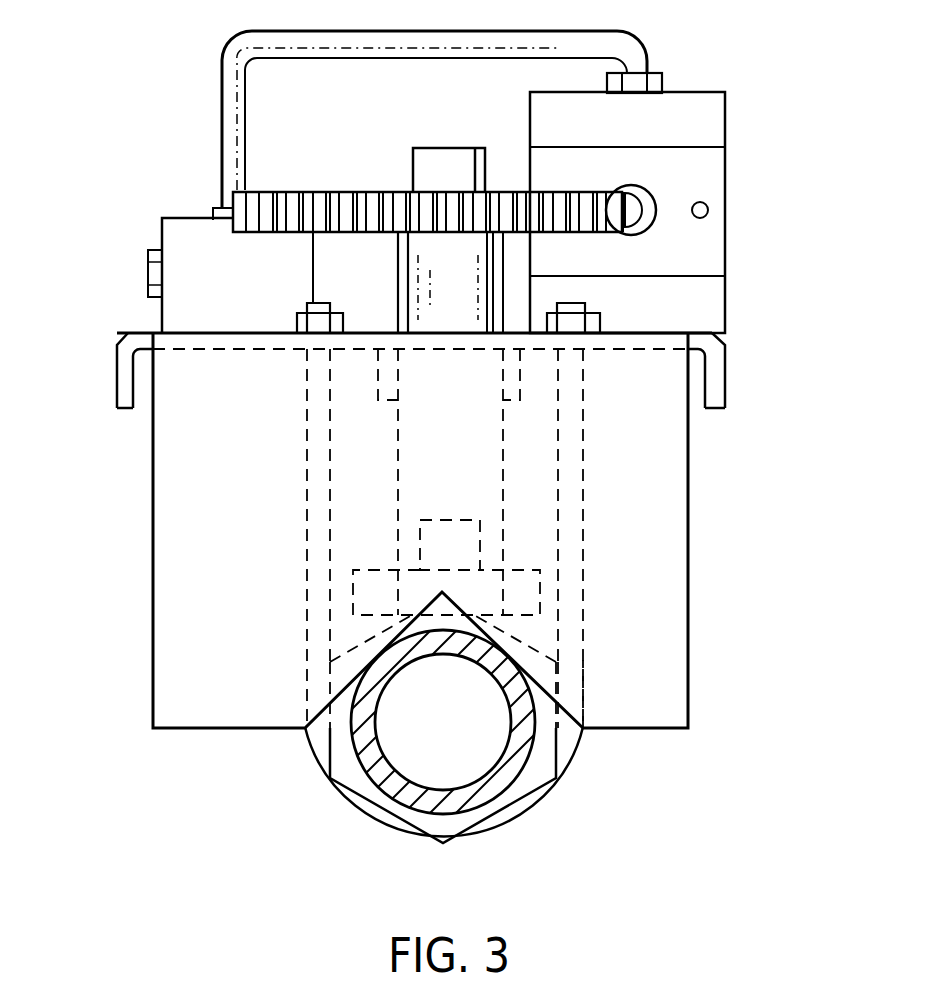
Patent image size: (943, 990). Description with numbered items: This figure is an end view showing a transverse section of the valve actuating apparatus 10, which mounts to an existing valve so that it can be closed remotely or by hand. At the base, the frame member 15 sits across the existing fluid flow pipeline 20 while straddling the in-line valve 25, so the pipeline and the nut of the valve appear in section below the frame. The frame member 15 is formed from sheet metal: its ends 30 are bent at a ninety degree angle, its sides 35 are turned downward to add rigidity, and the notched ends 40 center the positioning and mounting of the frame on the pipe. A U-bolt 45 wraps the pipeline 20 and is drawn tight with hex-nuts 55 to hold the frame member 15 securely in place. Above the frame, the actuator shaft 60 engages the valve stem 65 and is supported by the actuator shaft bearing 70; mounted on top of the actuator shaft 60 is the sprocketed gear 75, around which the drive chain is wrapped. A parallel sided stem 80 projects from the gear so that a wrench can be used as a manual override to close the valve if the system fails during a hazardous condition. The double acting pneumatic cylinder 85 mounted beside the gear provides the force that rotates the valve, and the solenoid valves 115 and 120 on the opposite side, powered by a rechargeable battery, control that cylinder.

The valve actuating apparatus 10 is at (197, 118).
The frame member 15 is at (658, 332).
The fluid flow pipeline 20 is at (523, 770).
The in-line valve 25 is at (378, 810).
The ends 30 is at (660, 475).
The sides 35 is at (118, 380).
The notched ends 40 is at (437, 598).
The U-bolt 45 is at (588, 606).
The hex-nuts 55 is at (295, 320).
The actuator shaft 60 is at (430, 428).
The valve stem 65 is at (440, 540).
The actuator shaft bearing 70 is at (378, 370).
The sprocketed gear 75 is at (345, 190).
The parallel sided stem 80 is at (452, 150).
The double acting pneumatic cylinder 85 is at (698, 127).
The solenoid valve 115 is at (183, 220).
The solenoid valve 120 is at (158, 230).